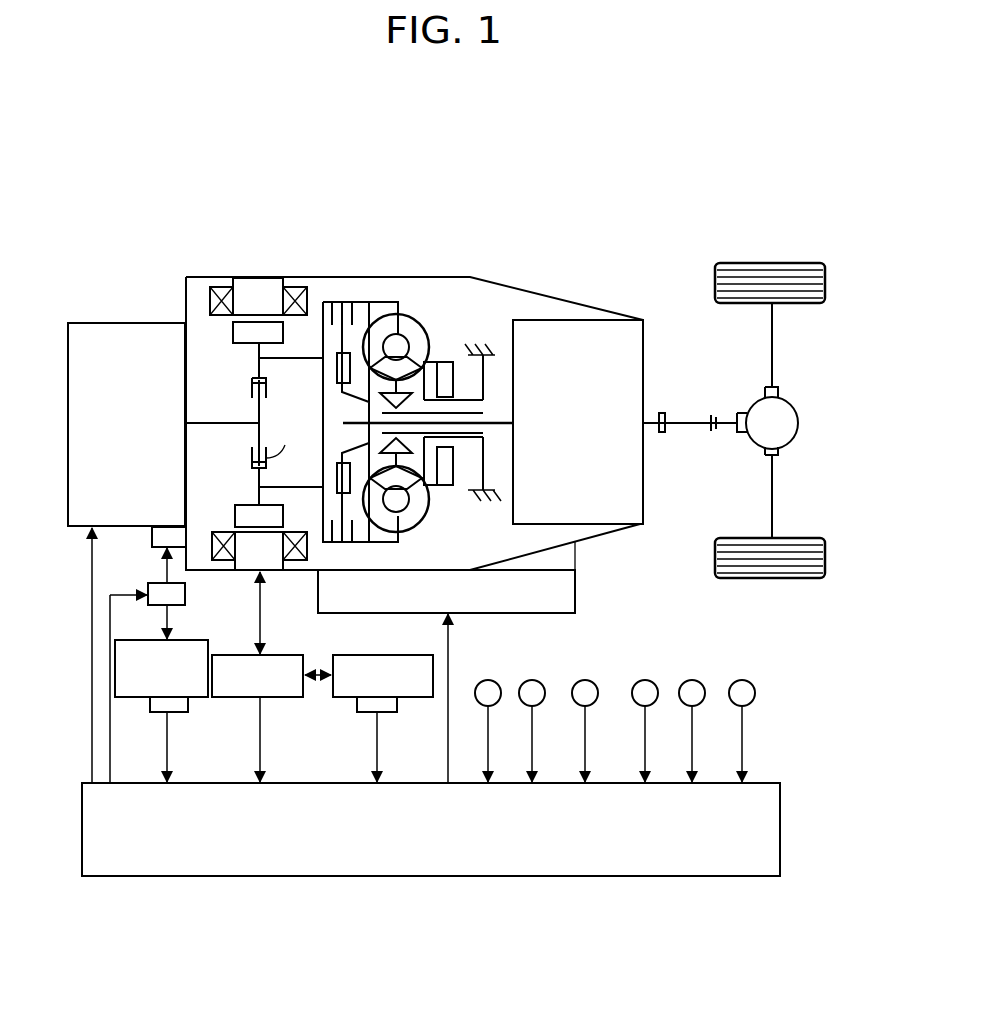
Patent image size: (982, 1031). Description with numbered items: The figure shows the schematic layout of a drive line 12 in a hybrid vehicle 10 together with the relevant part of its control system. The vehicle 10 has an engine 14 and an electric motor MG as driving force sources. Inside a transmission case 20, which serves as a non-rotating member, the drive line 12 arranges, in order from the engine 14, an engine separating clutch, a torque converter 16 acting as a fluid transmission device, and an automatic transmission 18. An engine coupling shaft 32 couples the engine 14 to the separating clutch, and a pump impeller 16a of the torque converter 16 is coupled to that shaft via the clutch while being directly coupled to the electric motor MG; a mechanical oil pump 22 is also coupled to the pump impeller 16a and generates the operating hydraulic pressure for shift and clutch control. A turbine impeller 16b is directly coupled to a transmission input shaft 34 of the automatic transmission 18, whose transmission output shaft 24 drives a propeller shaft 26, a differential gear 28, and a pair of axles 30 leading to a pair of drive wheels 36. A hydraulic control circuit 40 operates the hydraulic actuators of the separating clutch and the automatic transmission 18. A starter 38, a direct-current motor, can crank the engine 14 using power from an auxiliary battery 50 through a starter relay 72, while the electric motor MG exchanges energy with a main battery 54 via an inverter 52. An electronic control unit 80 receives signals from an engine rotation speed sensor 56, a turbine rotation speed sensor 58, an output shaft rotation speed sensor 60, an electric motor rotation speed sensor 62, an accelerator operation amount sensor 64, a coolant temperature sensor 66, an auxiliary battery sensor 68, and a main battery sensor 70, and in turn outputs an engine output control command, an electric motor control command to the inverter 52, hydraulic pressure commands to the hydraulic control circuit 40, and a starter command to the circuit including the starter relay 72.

The vehicle 10 is at (586, 182).
The drive line 12 is at (402, 227).
The engine 14 is at (92, 330).
The torque converter 16 is at (431, 306).
The pump impeller 16a is at (417, 513).
The turbine impeller 16b is at (375, 513).
The automatic transmission 18 is at (628, 372).
The transmission case 20 is at (423, 277).
The mechanical oil pump 22 is at (445, 472).
The transmission output shaft 24 is at (648, 410).
The propeller shaft 26 is at (688, 427).
The differential gear 28 is at (785, 405).
The axles 30 is at (772, 345).
The engine coupling shaft 32 is at (220, 420).
The transmission input shaft 34 is at (498, 425).
The drive wheels 36 is at (717, 287).
The starter 38 is at (152, 535).
The hydraulic control circuit 40 is at (575, 577).
The auxiliary battery 50 is at (190, 648).
The inverter 52 is at (278, 658).
The main battery 54 is at (367, 655).
The engine rotation speed sensor 56 is at (481, 682).
The turbine rotation speed sensor 58 is at (525, 682).
The output shaft rotation speed sensor 60 is at (578, 682).
The electric motor rotation speed sensor 62 is at (638, 682).
The accelerator operation amount sensor 64 is at (685, 682).
The coolant temperature sensor 66 is at (735, 682).
The auxiliary battery sensor 68 is at (150, 703).
The main battery sensor 70 is at (357, 703).
The starter relay 72 is at (185, 597).
The electronic control unit 80 is at (763, 795).